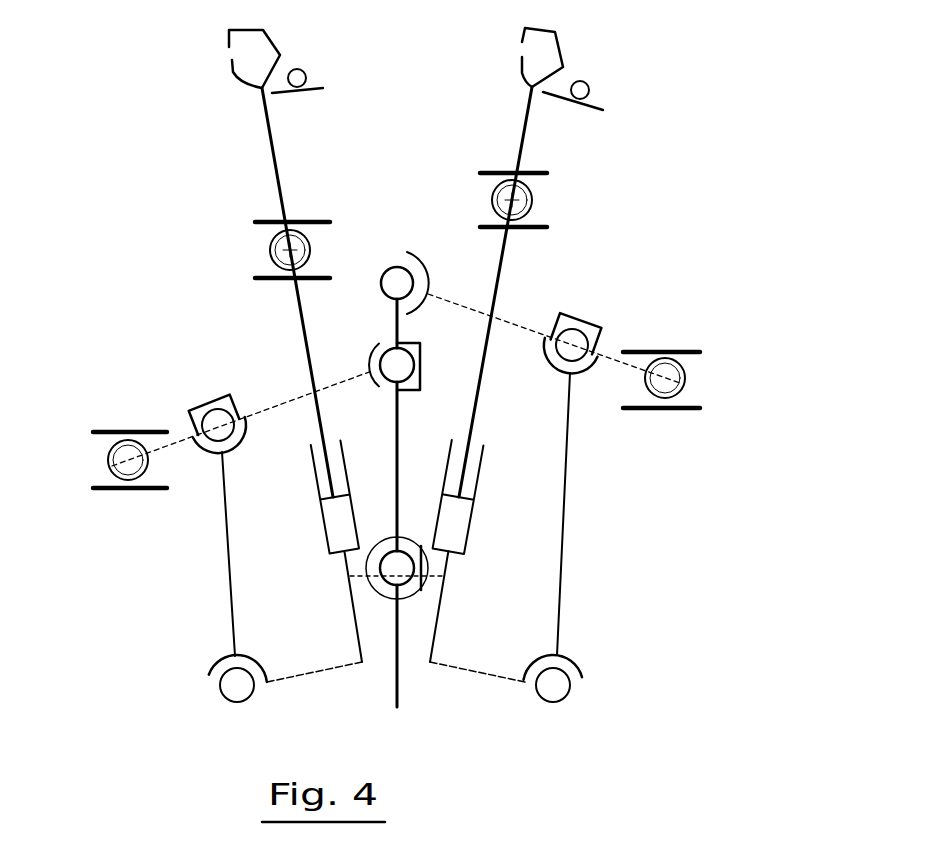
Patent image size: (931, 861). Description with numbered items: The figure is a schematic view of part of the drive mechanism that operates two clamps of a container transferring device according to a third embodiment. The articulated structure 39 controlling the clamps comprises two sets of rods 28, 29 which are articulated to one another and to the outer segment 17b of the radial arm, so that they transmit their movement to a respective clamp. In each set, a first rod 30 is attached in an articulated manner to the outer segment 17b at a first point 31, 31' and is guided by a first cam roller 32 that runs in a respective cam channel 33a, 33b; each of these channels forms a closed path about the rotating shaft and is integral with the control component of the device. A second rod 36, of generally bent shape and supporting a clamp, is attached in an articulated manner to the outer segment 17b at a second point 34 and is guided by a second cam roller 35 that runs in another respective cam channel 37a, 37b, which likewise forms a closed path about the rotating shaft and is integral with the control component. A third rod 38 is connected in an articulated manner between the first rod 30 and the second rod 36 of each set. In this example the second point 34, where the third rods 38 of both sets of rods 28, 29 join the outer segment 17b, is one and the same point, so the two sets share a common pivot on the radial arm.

The outer segment 17b is at (397, 695).
The set of rods 28 is at (512, 587).
The set of rods 29 is at (282, 587).
The first rod 30 is at (287, 400).
The first point 31 is at (410, 258).
The first point 31' is at (375, 351).
The first cam roller 32 is at (105, 463).
The cam channel 33a is at (692, 401).
The cam channel 33b is at (153, 475).
The second point 34 is at (403, 535).
The second cam roller 35 is at (270, 250).
The second rod 36 is at (357, 623).
The cam channel 37a is at (535, 223).
The cam channel 37b is at (315, 275).
The third rod 38 is at (232, 623).
The articulated structure 39 is at (612, 526).